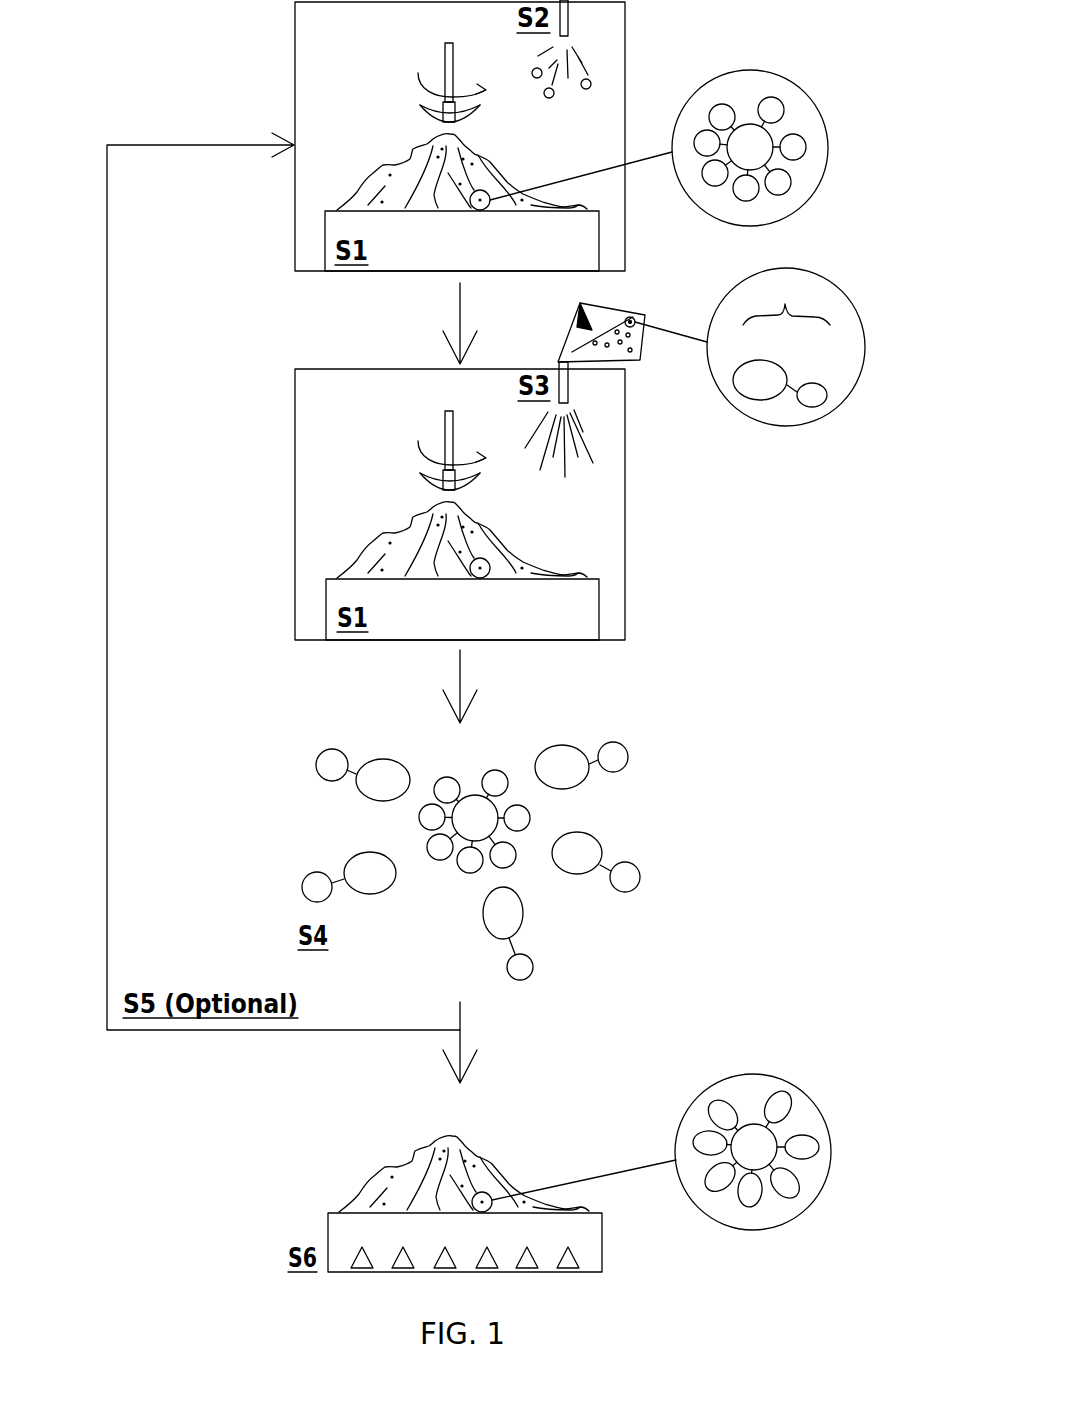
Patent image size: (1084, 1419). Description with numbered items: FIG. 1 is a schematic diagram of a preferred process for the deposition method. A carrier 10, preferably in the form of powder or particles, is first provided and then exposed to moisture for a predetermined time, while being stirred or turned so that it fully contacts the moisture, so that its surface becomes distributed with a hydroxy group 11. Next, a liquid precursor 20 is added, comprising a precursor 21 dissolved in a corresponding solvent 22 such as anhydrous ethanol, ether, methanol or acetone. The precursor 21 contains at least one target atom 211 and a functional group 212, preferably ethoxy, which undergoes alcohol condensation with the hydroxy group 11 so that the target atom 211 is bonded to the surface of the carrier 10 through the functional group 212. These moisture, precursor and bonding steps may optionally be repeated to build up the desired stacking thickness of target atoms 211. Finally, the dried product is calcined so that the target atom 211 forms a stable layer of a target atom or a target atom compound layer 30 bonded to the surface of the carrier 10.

The carrier 10 is at (408, 163).
The hydroxy group 11 is at (793, 147).
The liquid precursor 20 is at (578, 316).
The precursor 21 is at (633, 333).
The solvent 22 is at (638, 352).
The target atom 211 is at (747, 370).
The functional group 212 is at (815, 387).
The target atom compound layer 30 is at (807, 1147).